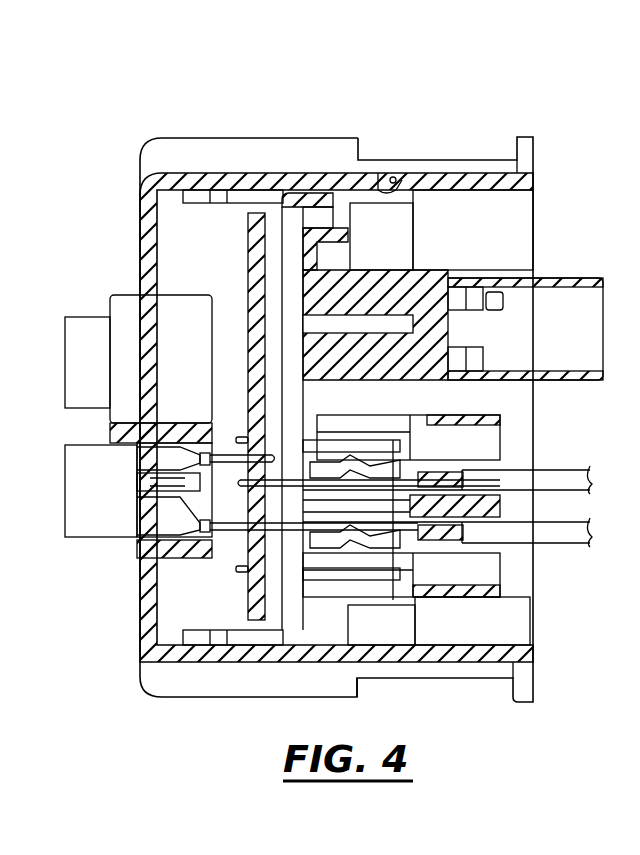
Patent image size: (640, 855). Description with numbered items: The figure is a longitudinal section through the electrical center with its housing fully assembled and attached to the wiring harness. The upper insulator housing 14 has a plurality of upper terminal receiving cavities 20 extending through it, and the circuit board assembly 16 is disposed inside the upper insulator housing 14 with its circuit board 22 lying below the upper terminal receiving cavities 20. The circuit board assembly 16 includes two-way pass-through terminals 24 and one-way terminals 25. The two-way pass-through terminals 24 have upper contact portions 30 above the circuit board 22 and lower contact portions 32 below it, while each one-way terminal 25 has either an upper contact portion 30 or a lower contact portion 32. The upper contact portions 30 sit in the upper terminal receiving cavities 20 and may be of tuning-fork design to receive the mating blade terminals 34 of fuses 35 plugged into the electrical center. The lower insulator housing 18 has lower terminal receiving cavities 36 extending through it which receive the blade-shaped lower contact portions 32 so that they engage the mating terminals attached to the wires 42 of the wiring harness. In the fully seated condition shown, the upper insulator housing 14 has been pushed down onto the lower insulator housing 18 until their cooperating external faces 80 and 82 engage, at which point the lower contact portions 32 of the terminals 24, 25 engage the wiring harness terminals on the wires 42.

The upper insulator housing 14 is at (273, 647).
The circuit board assembly 16 is at (240, 600).
The lower insulator housing 18 is at (487, 165).
The upper terminal receiving cavities 20 is at (155, 477).
The circuit board 22 is at (217, 633).
The two-way pass-through terminals 24 is at (229, 597).
The upper contact portions 30 is at (233, 538).
The one-way terminals 25 is at (227, 456).
The lower contact portions 32 is at (372, 483).
The blade terminals 34 is at (137, 556).
The fuses 35 is at (58, 478).
The lower terminal receiving cavities 36 is at (487, 437).
The wires 42 is at (575, 477).
The external face of upper housing 80 is at (395, 180).
The external face of lower housing 82 is at (396, 186).